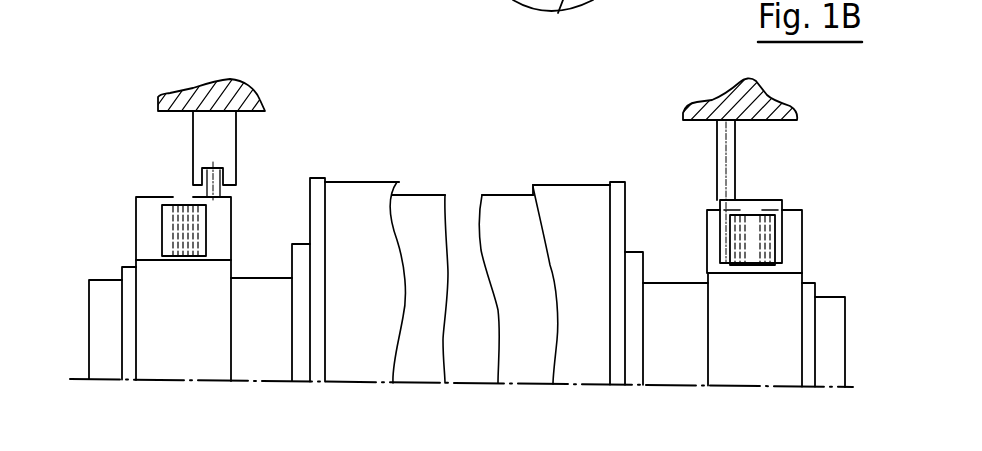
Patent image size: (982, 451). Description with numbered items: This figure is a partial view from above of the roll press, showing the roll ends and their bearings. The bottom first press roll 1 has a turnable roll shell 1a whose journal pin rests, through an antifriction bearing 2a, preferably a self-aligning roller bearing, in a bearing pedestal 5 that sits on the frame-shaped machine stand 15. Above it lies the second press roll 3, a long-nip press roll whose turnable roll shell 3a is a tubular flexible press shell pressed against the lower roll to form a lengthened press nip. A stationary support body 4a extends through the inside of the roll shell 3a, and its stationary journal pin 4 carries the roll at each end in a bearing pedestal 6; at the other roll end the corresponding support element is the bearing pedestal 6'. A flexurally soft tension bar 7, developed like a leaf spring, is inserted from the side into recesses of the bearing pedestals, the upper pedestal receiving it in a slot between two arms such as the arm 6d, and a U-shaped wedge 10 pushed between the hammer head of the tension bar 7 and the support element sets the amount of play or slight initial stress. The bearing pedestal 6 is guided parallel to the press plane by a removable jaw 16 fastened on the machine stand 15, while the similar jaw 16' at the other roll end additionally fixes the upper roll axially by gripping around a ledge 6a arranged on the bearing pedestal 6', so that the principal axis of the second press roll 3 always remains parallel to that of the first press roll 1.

The first press roll 1 is at (160, 0).
The roll shell 1a is at (312, 19).
The bearing pedestal 5 is at (443, 0).
The antifriction bearing 2a is at (563, 13).
The second press roll 3 is at (623, 142).
The roll shell 3a is at (355, 190).
The journal pin 4 is at (663, 295).
The support body 4a is at (497, 210).
The bearing pedestal 6 is at (769, 357).
The bearing pedestal 6' is at (199, 336).
The ledge 6a is at (203, 192).
The arm 6d is at (708, 218).
The tension bar 7 is at (770, 237).
The U-shaped wedge 10 is at (760, 197).
The machine stand 15 is at (195, 92).
The jaw 16 is at (754, 191).
The jaw 16' is at (254, 155).